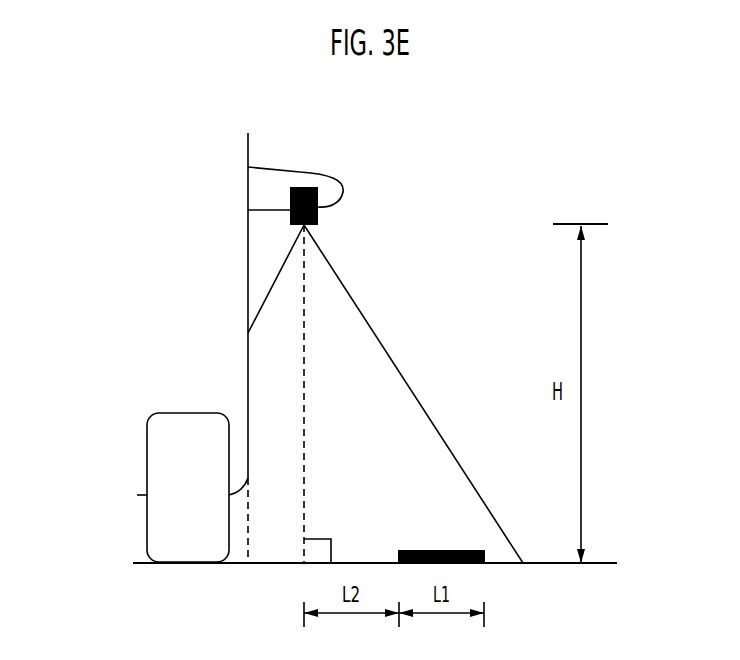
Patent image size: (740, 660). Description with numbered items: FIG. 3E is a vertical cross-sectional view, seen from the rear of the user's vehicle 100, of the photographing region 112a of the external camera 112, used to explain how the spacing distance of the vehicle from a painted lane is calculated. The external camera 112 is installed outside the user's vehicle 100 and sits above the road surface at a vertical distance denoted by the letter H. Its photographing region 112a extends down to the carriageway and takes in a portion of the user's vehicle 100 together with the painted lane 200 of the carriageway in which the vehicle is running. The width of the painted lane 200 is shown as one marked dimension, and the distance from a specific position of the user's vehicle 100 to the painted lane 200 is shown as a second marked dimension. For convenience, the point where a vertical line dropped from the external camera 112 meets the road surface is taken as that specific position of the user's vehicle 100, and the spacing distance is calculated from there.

The user's vehicle 100 is at (248, 135).
The external camera 112 is at (302, 187).
The photographing region 112a is at (525, 562).
The painted lane 200 is at (423, 550).